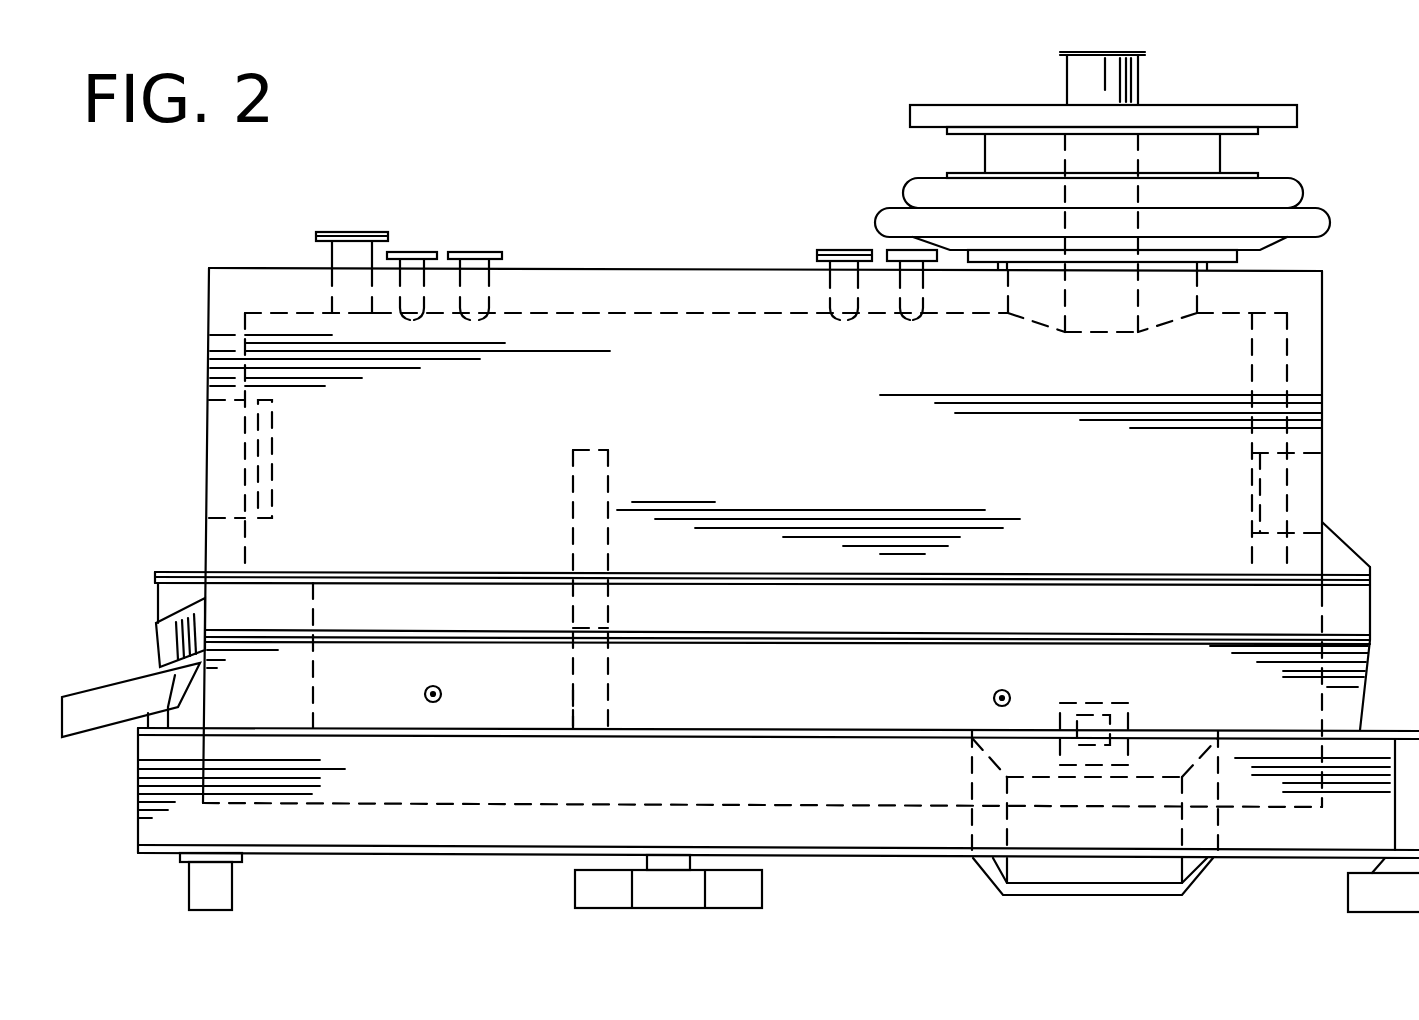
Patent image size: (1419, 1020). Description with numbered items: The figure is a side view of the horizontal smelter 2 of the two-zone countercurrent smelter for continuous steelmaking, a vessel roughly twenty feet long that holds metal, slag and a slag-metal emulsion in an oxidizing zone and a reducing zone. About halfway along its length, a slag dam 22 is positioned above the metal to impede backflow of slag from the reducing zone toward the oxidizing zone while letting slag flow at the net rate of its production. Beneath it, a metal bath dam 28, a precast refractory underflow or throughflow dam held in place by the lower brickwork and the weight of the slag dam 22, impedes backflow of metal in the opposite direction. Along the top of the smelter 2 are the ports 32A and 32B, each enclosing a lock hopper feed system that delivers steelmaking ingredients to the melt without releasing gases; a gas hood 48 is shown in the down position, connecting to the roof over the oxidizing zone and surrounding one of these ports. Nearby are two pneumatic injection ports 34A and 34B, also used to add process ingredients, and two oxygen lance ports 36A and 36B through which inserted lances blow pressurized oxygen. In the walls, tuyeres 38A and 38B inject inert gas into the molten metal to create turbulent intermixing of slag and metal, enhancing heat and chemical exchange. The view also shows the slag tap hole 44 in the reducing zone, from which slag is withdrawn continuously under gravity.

The horizontal smelter 2 is at (1328, 343).
The slag dam 22 is at (573, 465).
The metal bath dam 28 is at (568, 705).
The port 32A is at (1112, 78).
The port 32B is at (356, 232).
The pneumatic injection port 34A is at (910, 250).
The pneumatic injection port 34B is at (410, 252).
The oxygen lance port 36A is at (840, 250).
The oxygen lance port 36B is at (477, 252).
The tuyere 38A is at (430, 686).
The tuyere 38B is at (1002, 690).
The slag tap hole 44 is at (152, 640).
The gas hood 48 is at (1280, 193).